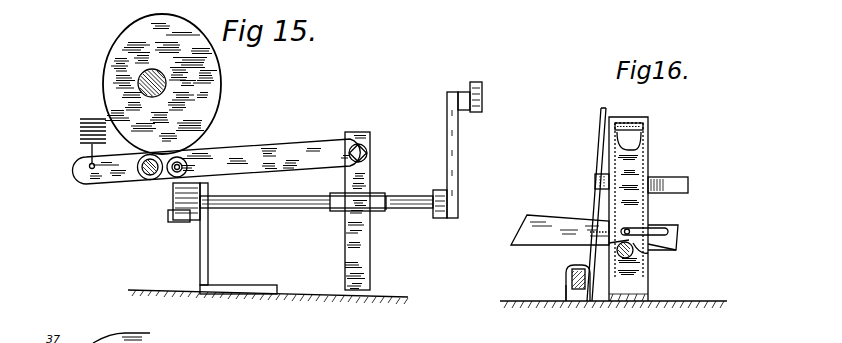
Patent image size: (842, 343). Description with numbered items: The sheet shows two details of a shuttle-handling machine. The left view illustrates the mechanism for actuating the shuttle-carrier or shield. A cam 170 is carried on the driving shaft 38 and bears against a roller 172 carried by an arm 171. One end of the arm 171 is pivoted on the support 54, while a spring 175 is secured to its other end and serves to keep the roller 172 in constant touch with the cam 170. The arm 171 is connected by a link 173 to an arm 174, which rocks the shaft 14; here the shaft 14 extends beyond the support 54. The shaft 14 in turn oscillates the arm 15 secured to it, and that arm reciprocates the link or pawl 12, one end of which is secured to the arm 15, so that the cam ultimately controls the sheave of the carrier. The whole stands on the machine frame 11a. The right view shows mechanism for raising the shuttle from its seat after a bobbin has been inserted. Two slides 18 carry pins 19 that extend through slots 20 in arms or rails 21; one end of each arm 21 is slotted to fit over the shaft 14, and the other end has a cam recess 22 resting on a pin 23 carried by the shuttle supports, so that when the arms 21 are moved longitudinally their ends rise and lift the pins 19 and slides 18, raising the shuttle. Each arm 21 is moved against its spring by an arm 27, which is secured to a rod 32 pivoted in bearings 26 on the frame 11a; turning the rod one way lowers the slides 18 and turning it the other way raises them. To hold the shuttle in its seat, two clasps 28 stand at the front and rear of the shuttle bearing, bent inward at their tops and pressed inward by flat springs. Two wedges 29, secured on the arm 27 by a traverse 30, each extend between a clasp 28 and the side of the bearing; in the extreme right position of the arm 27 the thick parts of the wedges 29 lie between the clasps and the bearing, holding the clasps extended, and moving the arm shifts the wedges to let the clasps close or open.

In FIG. 15, the cam 170 is at (216, 72).
In FIG. 15, the shaft 38 is at (160, 88).
In FIG. 15, the spring 175 is at (78, 144).
In FIG. 15, the arm 171 is at (287, 147).
In FIG. 15, the roller 172 is at (150, 159).
In FIG. 15, the link 173 is at (170, 176).
In FIG. 15, the arm 174 is at (187, 220).
In FIG. 15, the support 54 is at (370, 247).
In FIG. 15, the shaft 14 is at (290, 206).
In FIG. 15, the arm 15 is at (441, 155).
In FIG. 15, the link or pawl 12 is at (482, 86).
In FIG. 15, the frame 11a is at (280, 249).
In FIG. 16, the frame 11a is at (564, 310).
In FIG. 16, the slides 18 is at (641, 146).
In FIG. 16, the clasps 28 is at (643, 127).
In FIG. 16, the arm 27 is at (592, 204).
In FIG. 16, the traverse 30 is at (595, 183).
In FIG. 16, the wedges 29 is at (688, 187).
In FIG. 16, the arms or rails 21 is at (562, 211).
In FIG. 16, the slots 20 is at (678, 232).
In FIG. 16, the pins 19 is at (647, 222).
In FIG. 16, the pin 23 is at (638, 247).
In FIG. 16, the cam recess 22 is at (662, 250).
In FIG. 16, the rod 32 is at (570, 268).
In FIG. 16, the bearings 26 is at (566, 290).